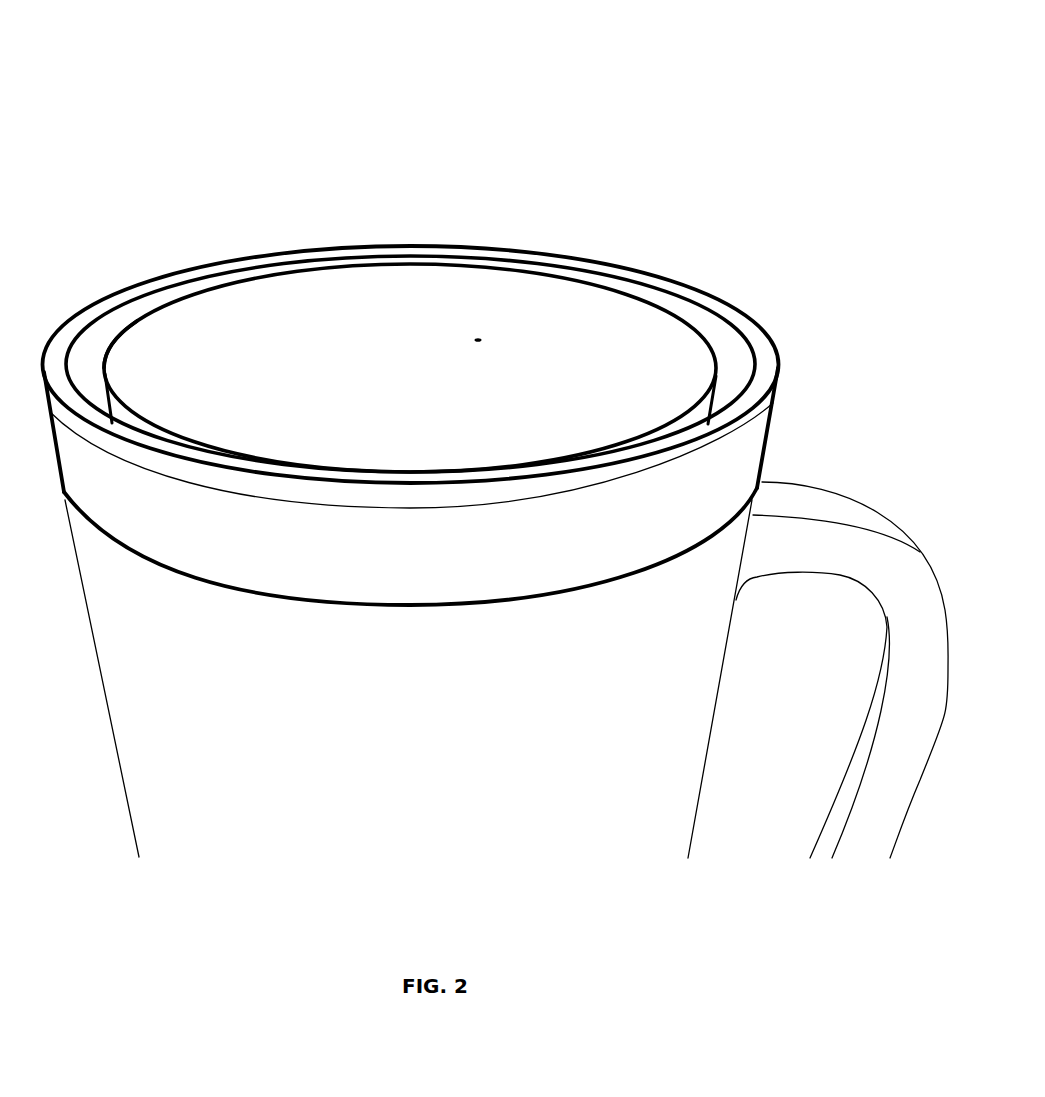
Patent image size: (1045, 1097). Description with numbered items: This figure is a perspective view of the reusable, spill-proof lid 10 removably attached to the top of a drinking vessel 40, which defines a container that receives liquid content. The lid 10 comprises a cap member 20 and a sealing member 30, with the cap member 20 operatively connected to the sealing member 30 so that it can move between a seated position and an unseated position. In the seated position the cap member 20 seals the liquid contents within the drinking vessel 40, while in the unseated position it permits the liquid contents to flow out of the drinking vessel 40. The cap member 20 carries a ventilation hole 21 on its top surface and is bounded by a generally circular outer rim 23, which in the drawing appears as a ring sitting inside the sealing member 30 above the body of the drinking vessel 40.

The lid 10 is at (138, 88).
The cap member 20 is at (365, 325).
The ventilation hole 21 is at (478, 340).
The outer rim 23 is at (138, 323).
The sealing member 30 is at (736, 362).
The drinking vessel 40 is at (120, 697).